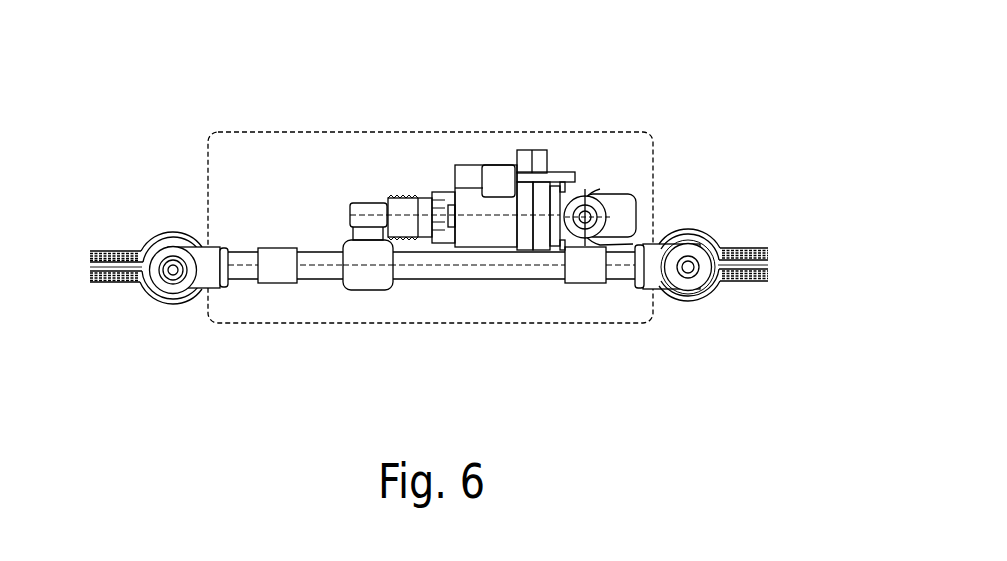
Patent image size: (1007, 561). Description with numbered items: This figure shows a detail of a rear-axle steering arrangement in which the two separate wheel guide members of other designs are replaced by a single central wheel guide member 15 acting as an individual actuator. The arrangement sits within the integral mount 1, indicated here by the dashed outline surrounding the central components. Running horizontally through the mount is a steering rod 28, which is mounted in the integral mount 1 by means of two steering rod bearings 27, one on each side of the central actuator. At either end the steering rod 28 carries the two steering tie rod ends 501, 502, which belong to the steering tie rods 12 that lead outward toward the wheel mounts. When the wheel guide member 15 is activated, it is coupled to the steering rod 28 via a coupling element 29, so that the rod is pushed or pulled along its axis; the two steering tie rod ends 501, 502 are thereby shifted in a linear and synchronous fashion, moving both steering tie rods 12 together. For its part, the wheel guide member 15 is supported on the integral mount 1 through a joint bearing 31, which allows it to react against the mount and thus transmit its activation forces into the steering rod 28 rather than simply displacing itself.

The integral mount 1 is at (378, 153).
The steering tie rod 12 is at (117, 280).
The wheel guide member 15 is at (475, 173).
The steering rod bearing 27 is at (275, 250).
The steering rod 28 is at (620, 280).
The coupling element 29 is at (378, 283).
The joint bearing 31 is at (622, 198).
The steering tie rod end 501 is at (164, 245).
The steering tie rod end 502 is at (737, 230).